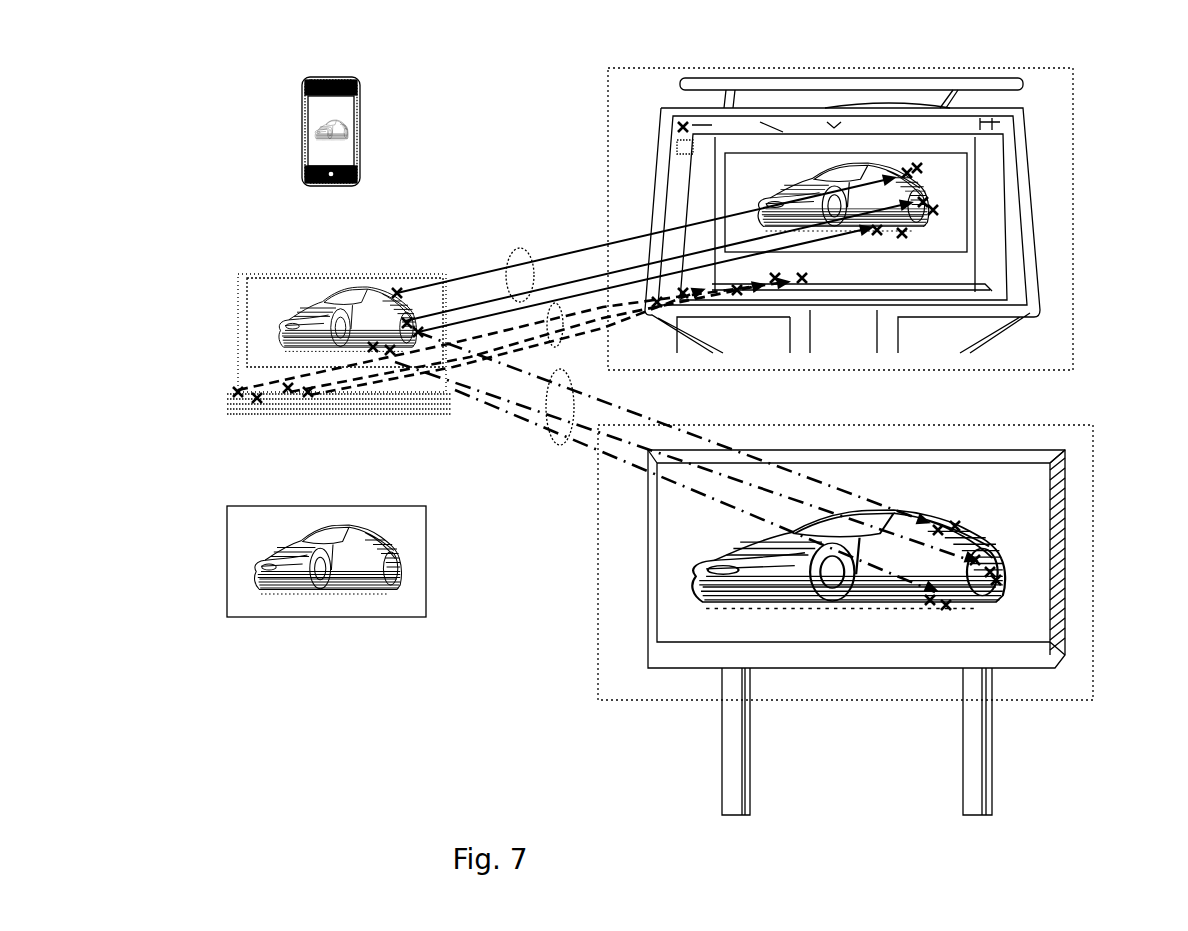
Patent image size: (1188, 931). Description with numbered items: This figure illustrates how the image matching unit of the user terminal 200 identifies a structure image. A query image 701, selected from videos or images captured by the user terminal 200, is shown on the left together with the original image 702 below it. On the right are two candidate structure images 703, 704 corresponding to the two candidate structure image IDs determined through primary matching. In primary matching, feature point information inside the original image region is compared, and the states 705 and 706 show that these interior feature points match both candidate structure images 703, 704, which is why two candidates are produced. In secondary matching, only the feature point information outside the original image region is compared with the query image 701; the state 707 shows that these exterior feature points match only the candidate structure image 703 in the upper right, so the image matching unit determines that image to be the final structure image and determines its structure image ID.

The user terminal 200 is at (362, 146).
The query image 701 is at (227, 355).
The original image 702 is at (227, 562).
The candidate structure image 703 is at (1062, 318).
The candidate structure image 704 is at (1060, 680).
The state of matching feature point information inside the original image region 705 is at (653, 254).
The state of matching feature point information inside the original image region 706 is at (674, 464).
The state of matching feature point information outside the original image region 707 is at (520, 338).